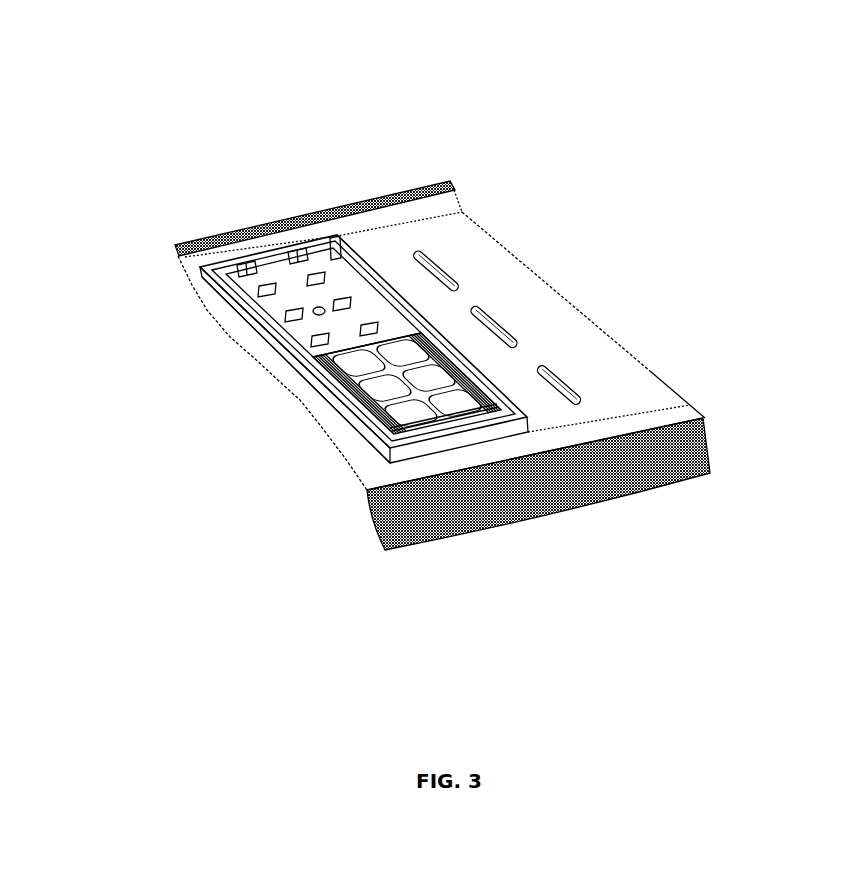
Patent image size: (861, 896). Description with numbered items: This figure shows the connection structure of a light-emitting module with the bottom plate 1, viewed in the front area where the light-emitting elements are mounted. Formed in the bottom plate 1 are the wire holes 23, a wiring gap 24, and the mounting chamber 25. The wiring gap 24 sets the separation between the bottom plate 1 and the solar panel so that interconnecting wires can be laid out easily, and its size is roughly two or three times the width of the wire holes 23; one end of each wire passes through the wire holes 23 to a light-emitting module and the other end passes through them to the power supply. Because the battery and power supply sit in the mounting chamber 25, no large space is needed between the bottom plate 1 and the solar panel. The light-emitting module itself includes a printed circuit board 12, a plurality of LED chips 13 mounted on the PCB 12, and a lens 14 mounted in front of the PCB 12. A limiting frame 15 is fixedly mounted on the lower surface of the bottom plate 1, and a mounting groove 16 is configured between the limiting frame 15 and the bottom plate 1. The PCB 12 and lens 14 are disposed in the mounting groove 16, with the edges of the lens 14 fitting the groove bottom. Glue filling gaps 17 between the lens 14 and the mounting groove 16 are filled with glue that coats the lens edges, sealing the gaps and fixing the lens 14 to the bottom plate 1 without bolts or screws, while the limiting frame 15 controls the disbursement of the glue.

The bottom plate 1 is at (515, 295).
The printed circuit board 12 is at (200, 288).
The LED chips 13 is at (322, 270).
The lens 14 is at (357, 420).
The limiting frame 15 is at (287, 357).
The mounting groove 16 is at (370, 303).
The glue filling gap 17 is at (272, 262).
The wire holes 23 is at (562, 380).
The wiring gap 24 is at (386, 272).
The mounting chamber 25 is at (285, 221).